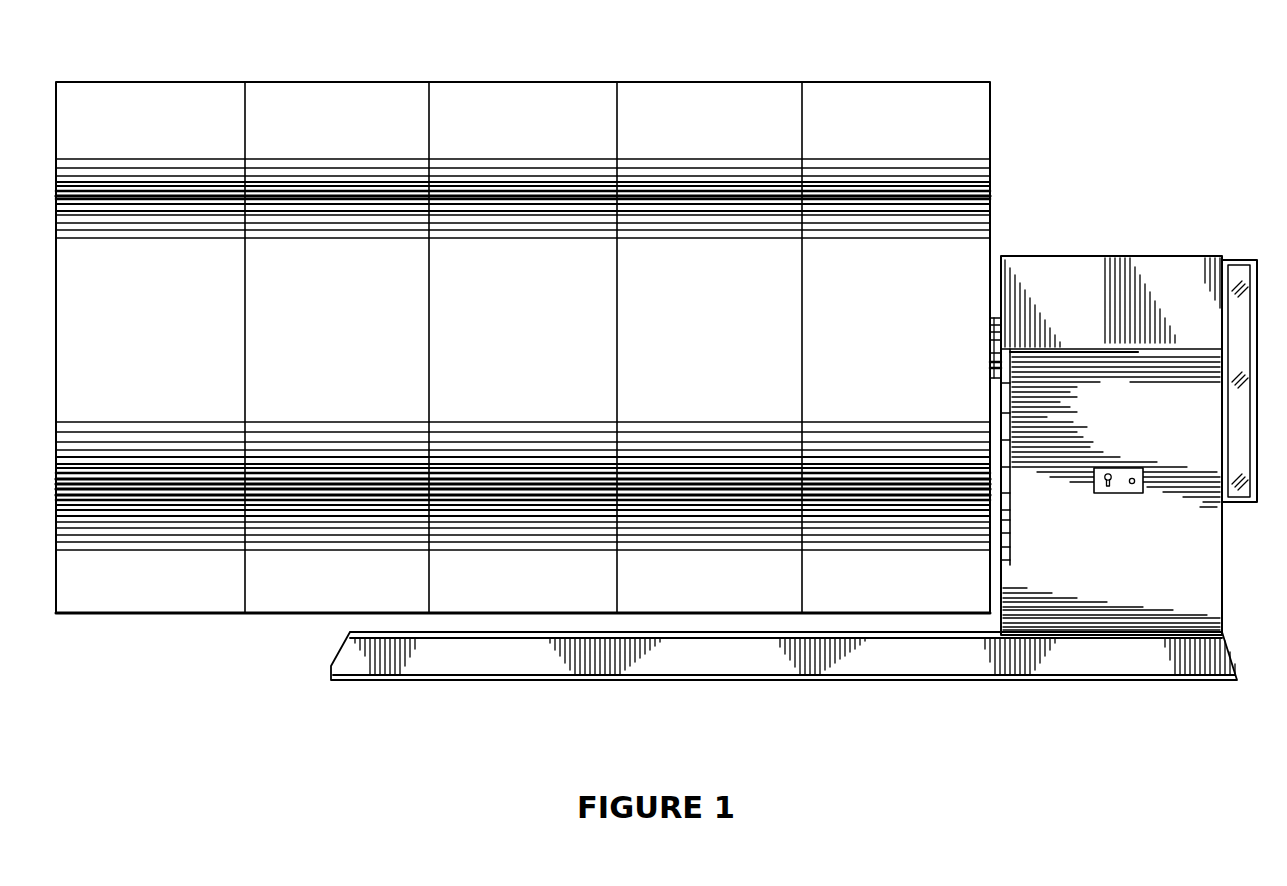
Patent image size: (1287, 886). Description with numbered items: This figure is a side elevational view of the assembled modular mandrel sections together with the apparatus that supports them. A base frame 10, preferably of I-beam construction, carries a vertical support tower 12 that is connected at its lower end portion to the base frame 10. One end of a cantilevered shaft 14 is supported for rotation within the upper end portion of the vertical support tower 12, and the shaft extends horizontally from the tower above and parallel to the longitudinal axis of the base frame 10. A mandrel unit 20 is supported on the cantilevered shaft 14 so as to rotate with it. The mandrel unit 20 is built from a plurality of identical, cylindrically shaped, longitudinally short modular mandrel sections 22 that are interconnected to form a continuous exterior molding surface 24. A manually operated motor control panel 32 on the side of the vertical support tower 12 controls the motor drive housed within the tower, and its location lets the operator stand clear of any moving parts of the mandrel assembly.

The base frame 10 is at (930, 660).
The vertical support tower 12 is at (1129, 445).
The cantilevered shaft 14 is at (998, 318).
The mandrel unit 20 is at (656, 386).
The modular mandrel sections 22 is at (147, 82).
The continuous exterior molding surface 24 is at (535, 341).
The motor control panel 32 is at (1128, 494).